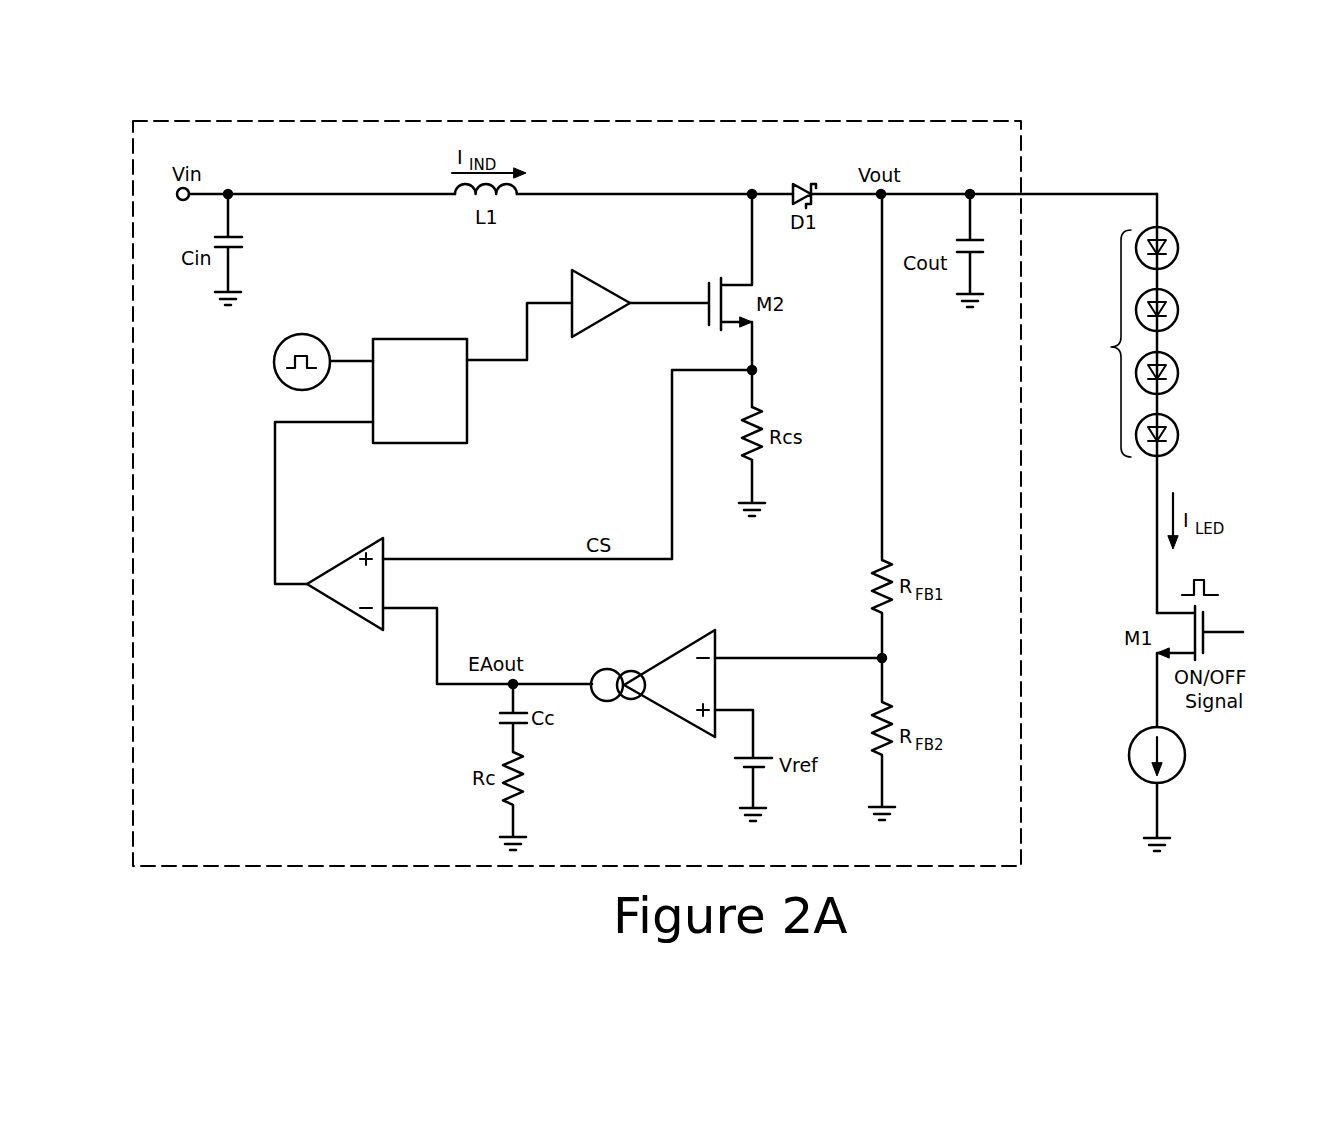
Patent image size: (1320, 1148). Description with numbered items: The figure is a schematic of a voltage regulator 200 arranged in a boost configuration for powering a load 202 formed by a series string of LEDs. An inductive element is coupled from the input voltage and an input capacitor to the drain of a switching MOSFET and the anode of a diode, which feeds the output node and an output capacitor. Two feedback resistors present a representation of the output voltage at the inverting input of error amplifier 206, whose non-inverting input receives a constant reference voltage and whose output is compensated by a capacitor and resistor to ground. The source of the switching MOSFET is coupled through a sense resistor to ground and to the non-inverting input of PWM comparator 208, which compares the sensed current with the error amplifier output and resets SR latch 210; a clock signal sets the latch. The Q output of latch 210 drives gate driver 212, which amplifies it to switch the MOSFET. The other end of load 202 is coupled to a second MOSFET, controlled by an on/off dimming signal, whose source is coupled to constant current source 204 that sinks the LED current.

The voltage regulator 200 is at (858, 92).
The load 202 is at (1125, 403).
The constant current source 204 is at (1185, 752).
The error amplifier 206 is at (663, 711).
The pulse width modulation comparator 208 is at (338, 609).
The Set-Reset latch component 210 is at (368, 447).
The gate driver 212 is at (604, 329).